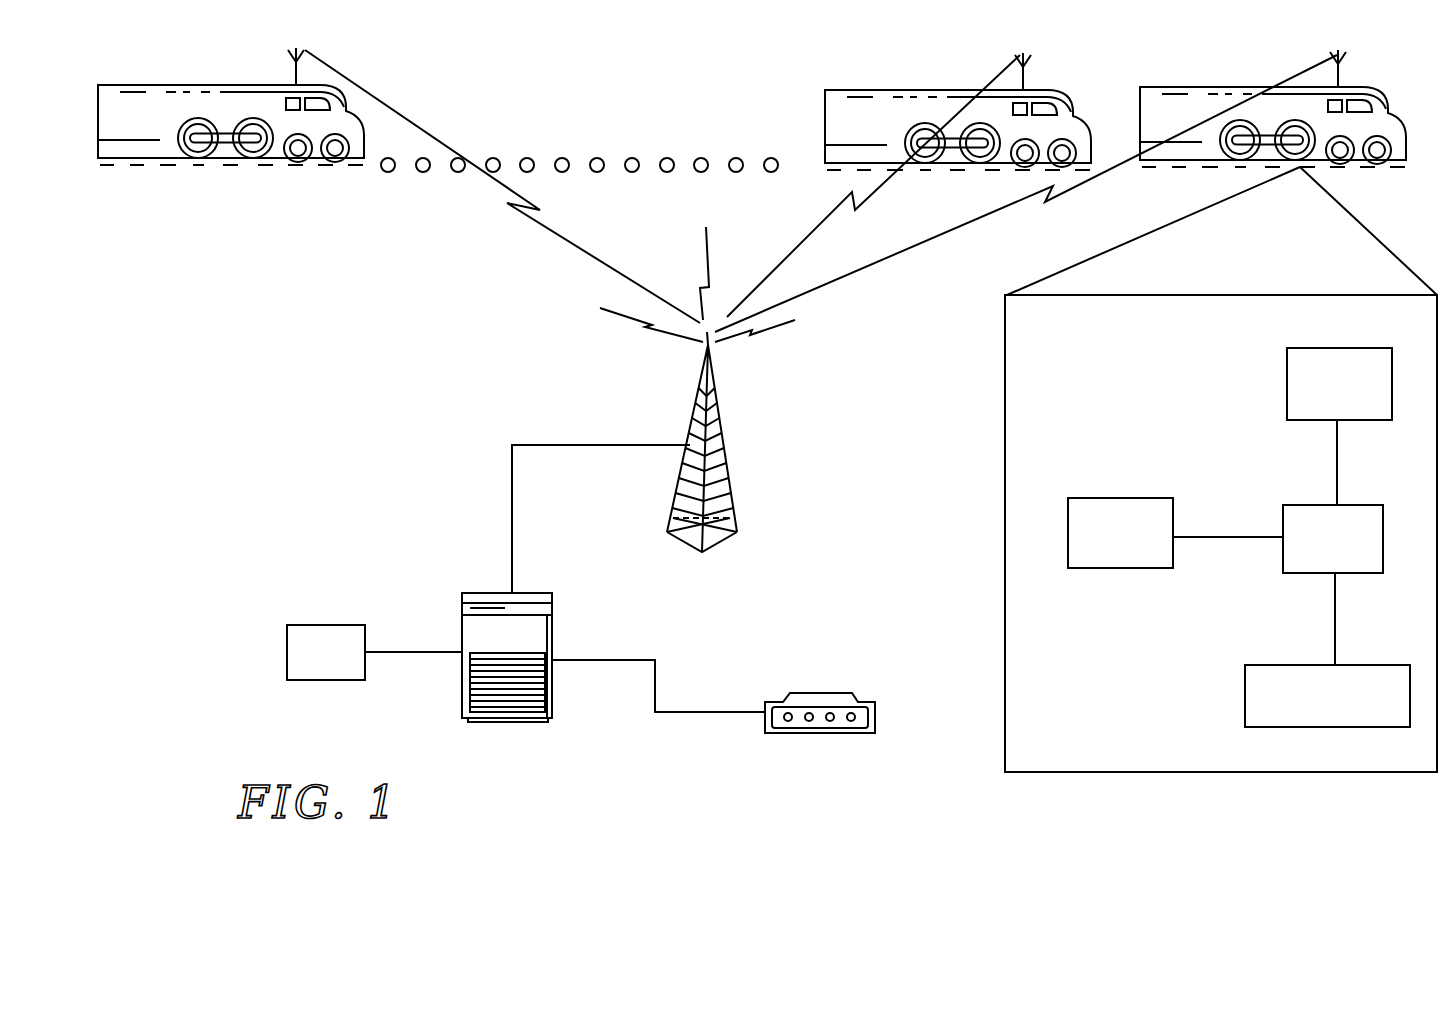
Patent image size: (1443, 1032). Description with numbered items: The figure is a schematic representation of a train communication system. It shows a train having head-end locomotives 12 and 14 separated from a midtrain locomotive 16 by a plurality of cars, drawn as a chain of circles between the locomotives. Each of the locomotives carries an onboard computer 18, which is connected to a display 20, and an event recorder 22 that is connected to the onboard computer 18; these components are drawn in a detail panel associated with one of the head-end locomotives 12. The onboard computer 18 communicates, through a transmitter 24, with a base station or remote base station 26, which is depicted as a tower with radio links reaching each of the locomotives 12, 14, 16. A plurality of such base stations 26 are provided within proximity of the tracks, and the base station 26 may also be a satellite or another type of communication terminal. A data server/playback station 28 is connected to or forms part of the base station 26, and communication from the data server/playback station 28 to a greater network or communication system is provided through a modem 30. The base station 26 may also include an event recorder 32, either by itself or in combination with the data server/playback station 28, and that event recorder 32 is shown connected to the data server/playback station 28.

The head-end locomotive 12 is at (1220, 92).
The head-end locomotive 14 is at (927, 96).
The midtrain locomotive 16 is at (222, 92).
The onboard computer 18 is at (1318, 505).
The display 20 is at (1245, 695).
The event recorder 22 is at (1160, 498).
The transmitter 24 is at (1287, 395).
The base station 26 is at (727, 463).
The data server/playback station 28 is at (556, 599).
The modem 30 is at (858, 696).
The event recorder 32 is at (341, 623).